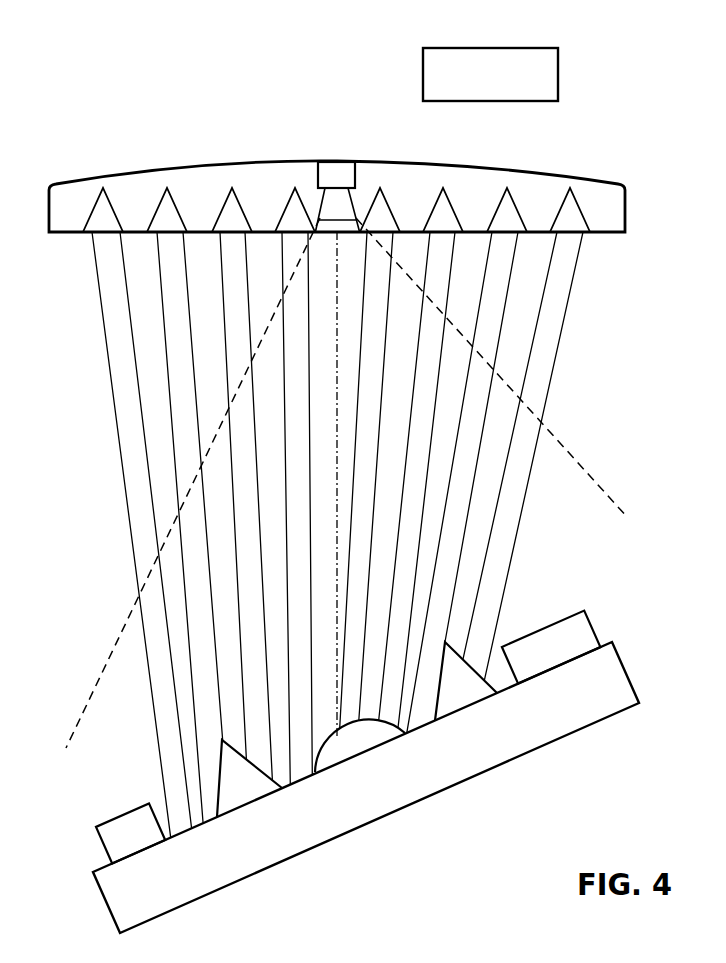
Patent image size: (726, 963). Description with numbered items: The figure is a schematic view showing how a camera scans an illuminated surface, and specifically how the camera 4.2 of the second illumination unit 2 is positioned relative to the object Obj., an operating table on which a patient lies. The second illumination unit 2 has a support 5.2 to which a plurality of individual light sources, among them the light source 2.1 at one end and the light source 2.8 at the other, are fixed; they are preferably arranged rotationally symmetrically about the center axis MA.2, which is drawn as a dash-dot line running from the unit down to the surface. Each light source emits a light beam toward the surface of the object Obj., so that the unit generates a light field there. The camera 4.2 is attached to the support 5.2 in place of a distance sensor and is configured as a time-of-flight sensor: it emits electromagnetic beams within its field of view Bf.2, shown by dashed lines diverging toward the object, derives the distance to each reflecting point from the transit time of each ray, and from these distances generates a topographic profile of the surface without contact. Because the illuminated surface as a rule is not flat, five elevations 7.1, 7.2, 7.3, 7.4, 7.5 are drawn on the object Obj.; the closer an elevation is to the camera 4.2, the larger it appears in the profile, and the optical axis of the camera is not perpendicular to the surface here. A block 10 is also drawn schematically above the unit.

The second illumination unit 2 is at (262, 140).
The light source 2.1 is at (103, 210).
The light source 2.8 is at (573, 213).
The camera 4.2 is at (337, 170).
The support 5.2 is at (198, 163).
The control unit 10 is at (502, 84).
The center axis MA.2 is at (337, 490).
The field of view Bf.2 is at (568, 451).
The object Obj. is at (340, 818).
The elevation 7.1 is at (137, 843).
The elevation 7.2 is at (242, 793).
The elevation 7.3 is at (352, 747).
The elevation 7.4 is at (463, 688).
The elevation 7.5 is at (552, 653).